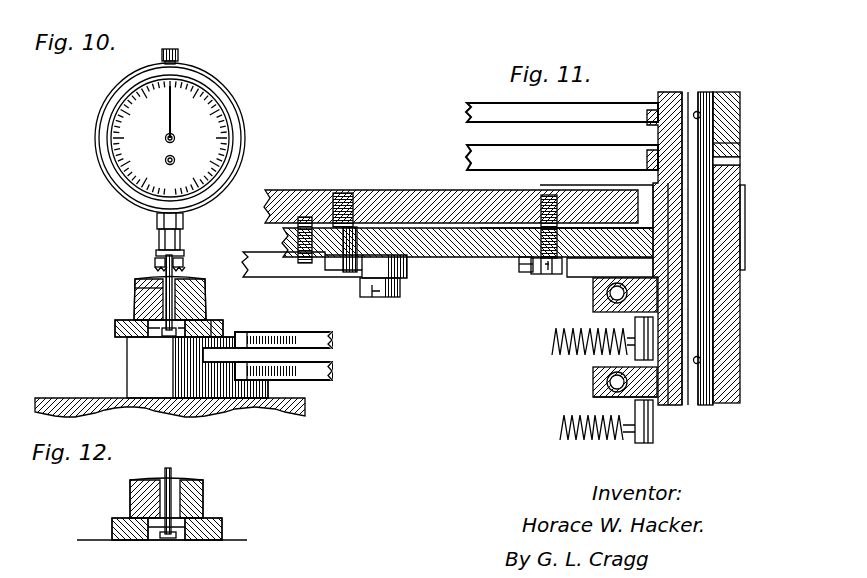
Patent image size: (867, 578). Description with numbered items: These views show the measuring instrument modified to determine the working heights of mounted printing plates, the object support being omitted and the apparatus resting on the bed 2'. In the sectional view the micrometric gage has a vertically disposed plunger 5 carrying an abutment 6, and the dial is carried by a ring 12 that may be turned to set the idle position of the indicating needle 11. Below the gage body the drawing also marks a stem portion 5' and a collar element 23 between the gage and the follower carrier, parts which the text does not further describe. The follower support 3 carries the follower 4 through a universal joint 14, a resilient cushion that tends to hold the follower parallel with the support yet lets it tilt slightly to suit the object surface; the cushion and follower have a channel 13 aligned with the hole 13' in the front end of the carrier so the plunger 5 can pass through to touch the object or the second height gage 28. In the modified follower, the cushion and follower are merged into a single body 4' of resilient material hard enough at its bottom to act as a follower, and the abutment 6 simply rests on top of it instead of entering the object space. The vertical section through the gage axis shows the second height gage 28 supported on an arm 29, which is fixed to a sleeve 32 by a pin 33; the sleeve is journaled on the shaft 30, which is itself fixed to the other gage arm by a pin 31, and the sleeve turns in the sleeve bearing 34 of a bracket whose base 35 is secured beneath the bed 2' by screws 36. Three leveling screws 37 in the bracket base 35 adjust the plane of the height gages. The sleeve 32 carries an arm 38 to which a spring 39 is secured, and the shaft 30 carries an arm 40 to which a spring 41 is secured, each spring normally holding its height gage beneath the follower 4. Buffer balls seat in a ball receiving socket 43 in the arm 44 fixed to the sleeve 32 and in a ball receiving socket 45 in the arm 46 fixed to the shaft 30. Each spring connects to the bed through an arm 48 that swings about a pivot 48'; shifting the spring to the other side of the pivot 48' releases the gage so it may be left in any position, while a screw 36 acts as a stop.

In FIG. 10, the bed 2' is at (182, 416).
In FIG. 11, the bed 2' is at (458, 195).
In FIG. 10, the follower support 3 is at (183, 257).
In FIG. 10, the follower 4 is at (144, 330).
In FIG. 12, the single body of resilient cushion material 4' is at (172, 529).
In FIG. 10, the plunger 5 is at (148, 299).
In FIG. 12, the plunger 5 is at (166, 491).
In FIG. 10, the stem 5' is at (187, 230).
In FIG. 10, the abutment 6 is at (168, 337).
In FIG. 12, the abutment 6 is at (172, 538).
In FIG. 10, the indicating needle 11 is at (170, 103).
In FIG. 10, the ring 12 is at (226, 94).
In FIG. 10, the channel 13 is at (194, 292).
In FIG. 12, the channel 13 is at (204, 501).
In FIG. 10, the hole 13' is at (133, 276).
In FIG. 10, the universal joint 14 is at (223, 330).
In FIG. 10, the collar 23 is at (157, 262).
In FIG. 10, the second height gage 28 is at (137, 363).
In FIG. 11, the arm 29 is at (463, 158).
In FIG. 11, the shaft 30 is at (692, 102).
In FIG. 11, the pin 31 is at (703, 113).
In FIG. 11, the sleeve 32 is at (733, 143).
In FIG. 11, the pin 33 is at (733, 162).
In FIG. 11, the sleeve bearing 34 is at (745, 216).
In FIG. 11, the bracket base 35 is at (500, 256).
In FIG. 11, the screws 36 is at (355, 274).
In FIG. 11, the leveling screws 37 is at (308, 268).
In FIG. 11, the arm 38 is at (633, 358).
In FIG. 11, the spring 39 is at (552, 341).
In FIG. 11, the arm 40 is at (648, 415).
In FIG. 11, the spring 41 is at (595, 440).
In FIG. 11, the ball receiving socket 43 is at (607, 294).
In FIG. 11, the arm 44 is at (650, 276).
In FIG. 11, the ball receiving socket 45 is at (612, 388).
In FIG. 11, the arm 46 is at (595, 396).
In FIG. 11, the arm 48 is at (302, 276).
In FIG. 11, the pivot 48' is at (394, 300).